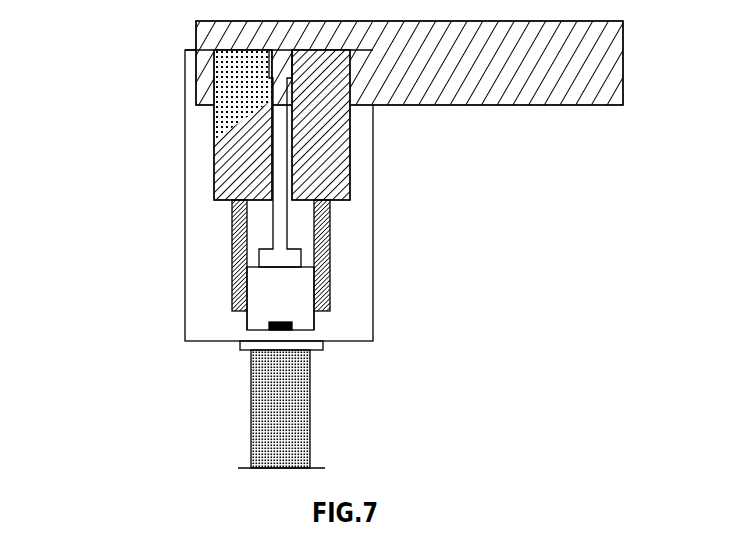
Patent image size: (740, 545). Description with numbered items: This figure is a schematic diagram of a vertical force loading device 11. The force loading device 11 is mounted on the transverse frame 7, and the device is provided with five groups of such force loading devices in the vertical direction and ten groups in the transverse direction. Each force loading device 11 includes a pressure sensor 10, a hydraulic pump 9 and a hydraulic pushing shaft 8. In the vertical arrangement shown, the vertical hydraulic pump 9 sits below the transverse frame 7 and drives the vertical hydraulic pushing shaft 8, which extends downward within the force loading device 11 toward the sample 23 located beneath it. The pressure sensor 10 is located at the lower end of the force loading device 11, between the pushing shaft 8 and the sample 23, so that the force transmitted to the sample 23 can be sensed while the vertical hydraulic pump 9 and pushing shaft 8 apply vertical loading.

The transverse frame 7 is at (196, 44).
The vertical hydraulic pushing shaft 8 is at (267, 302).
The vertical hydraulic pump 9 is at (232, 122).
The pressure sensor 10 is at (283, 327).
The force loading device 11 is at (185, 192).
The sample 23 is at (310, 412).